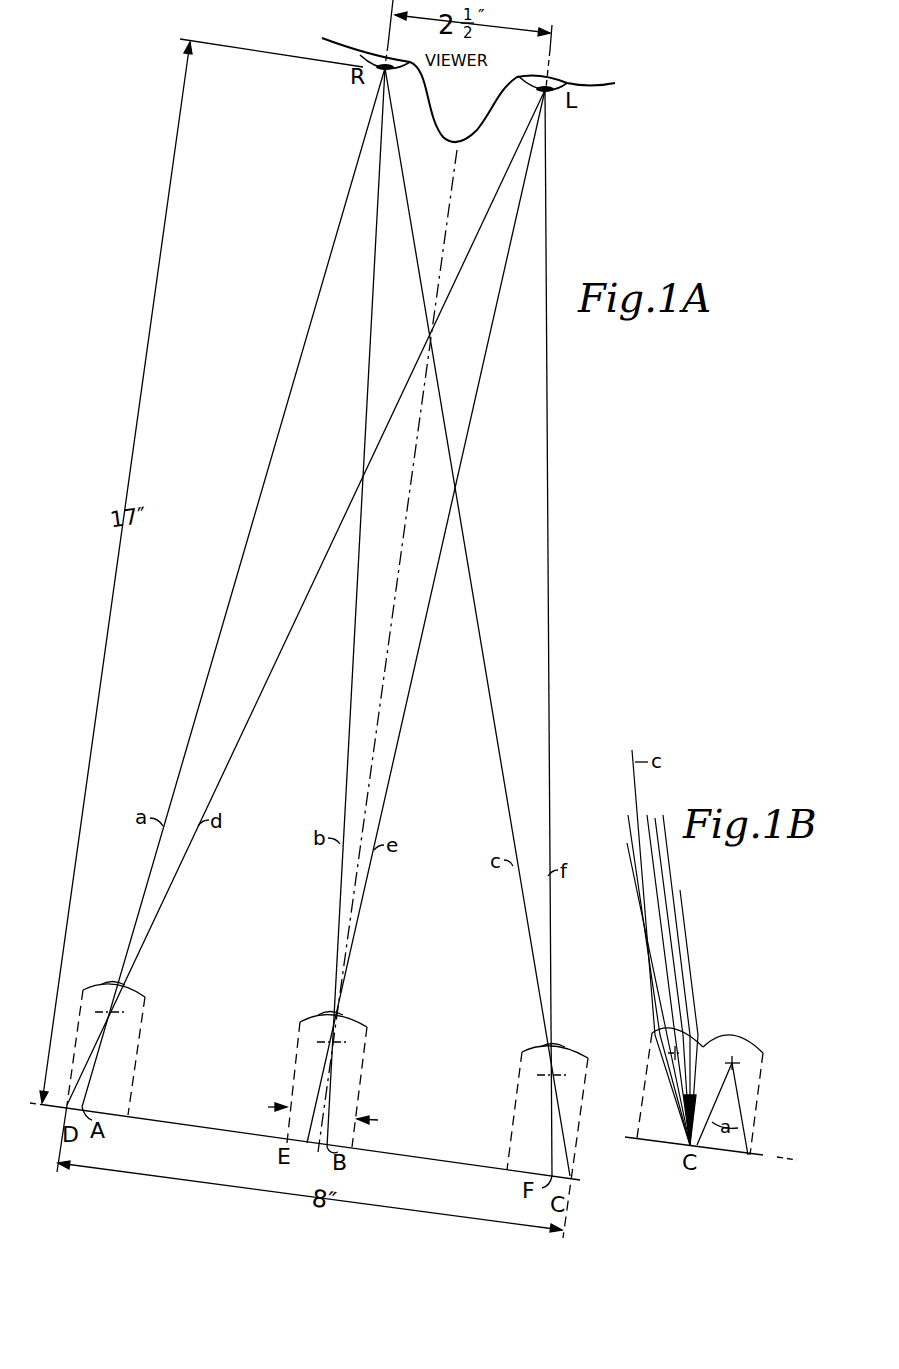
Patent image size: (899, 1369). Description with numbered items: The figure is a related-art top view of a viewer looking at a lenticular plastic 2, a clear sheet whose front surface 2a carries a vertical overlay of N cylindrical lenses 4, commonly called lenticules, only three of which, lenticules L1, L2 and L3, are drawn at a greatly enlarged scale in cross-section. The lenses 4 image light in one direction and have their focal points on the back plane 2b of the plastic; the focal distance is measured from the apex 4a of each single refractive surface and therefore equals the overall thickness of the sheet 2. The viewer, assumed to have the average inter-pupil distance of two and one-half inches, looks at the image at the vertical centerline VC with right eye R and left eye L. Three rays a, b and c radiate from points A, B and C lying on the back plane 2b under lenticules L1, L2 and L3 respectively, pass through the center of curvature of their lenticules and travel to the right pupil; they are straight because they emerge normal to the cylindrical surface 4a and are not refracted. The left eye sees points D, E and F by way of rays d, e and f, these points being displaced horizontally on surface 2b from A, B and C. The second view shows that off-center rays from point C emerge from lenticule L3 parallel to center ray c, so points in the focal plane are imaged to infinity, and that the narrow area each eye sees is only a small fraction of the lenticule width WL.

In FIG. 1A, the lenticular plastic 2 is at (317, 1027).
In FIG. 1A, the front surface 2a is at (410, 1082).
In FIG. 1A, the back plane 2b is at (207, 1130).
In FIG. 1A, the cylindrical lenses 4 is at (143, 990).
In FIG. 1A, the apex 4a is at (105, 984).
In FIG. 1A, the lenticule L1 is at (124, 1049).
In FIG. 1A, the lenticule L2 is at (344, 1079).
In FIG. 1A, the lenticule L3 is at (530, 1105).
In FIG. 1B, the lenticule L3 is at (665, 947).
In FIG. 1A, the vertical centerline VC is at (415, 473).
In FIG. 1A, the width of the lenticule WL is at (339, 1120).